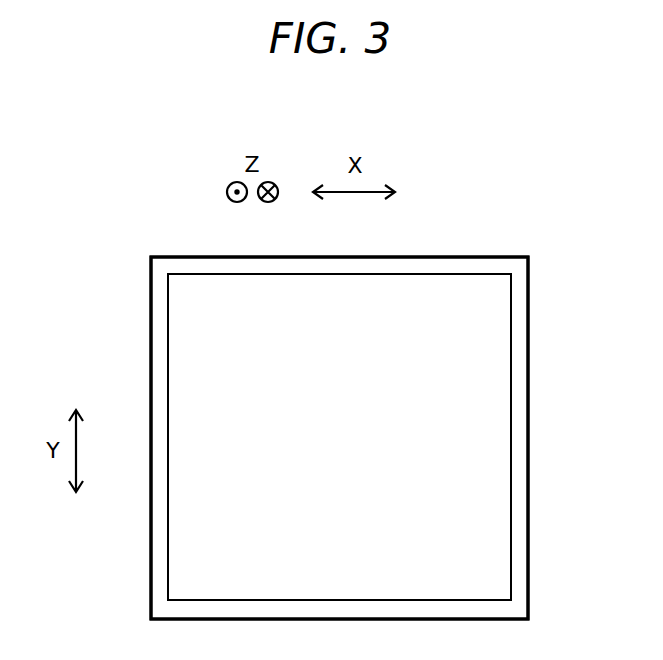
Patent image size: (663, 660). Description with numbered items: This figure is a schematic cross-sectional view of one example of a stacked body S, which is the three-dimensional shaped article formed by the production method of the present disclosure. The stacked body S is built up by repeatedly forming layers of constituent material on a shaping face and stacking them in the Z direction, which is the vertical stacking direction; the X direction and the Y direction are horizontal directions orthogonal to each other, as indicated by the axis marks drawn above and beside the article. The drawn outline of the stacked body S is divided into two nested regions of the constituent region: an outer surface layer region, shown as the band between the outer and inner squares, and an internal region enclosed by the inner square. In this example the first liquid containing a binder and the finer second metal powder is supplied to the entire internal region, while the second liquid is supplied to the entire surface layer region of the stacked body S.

The stacked body S is at (511, 219).